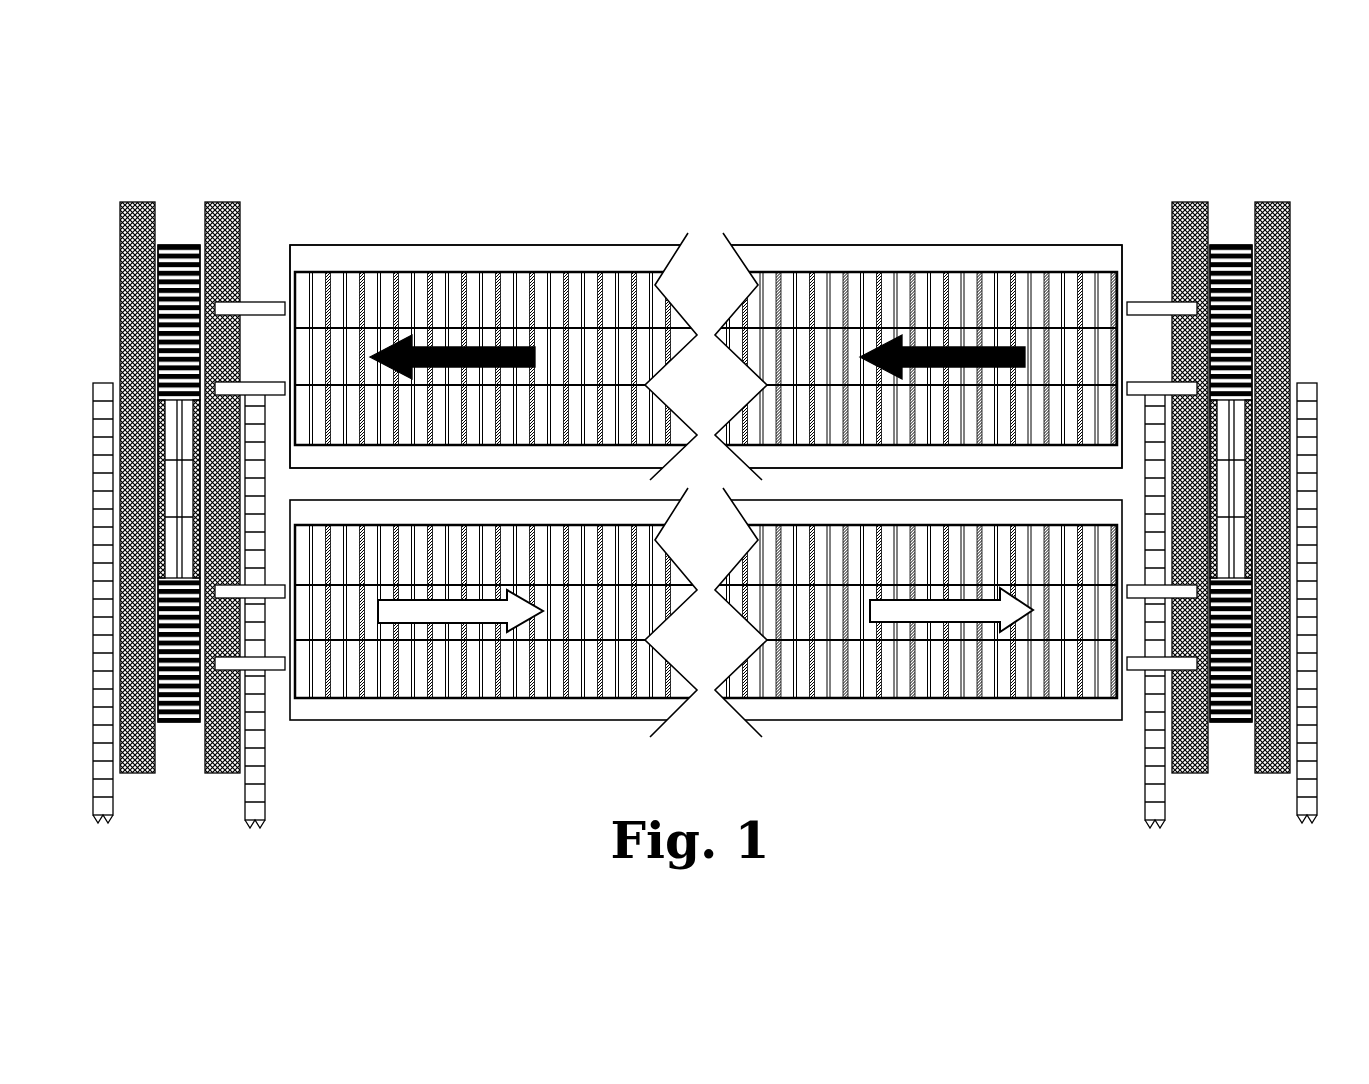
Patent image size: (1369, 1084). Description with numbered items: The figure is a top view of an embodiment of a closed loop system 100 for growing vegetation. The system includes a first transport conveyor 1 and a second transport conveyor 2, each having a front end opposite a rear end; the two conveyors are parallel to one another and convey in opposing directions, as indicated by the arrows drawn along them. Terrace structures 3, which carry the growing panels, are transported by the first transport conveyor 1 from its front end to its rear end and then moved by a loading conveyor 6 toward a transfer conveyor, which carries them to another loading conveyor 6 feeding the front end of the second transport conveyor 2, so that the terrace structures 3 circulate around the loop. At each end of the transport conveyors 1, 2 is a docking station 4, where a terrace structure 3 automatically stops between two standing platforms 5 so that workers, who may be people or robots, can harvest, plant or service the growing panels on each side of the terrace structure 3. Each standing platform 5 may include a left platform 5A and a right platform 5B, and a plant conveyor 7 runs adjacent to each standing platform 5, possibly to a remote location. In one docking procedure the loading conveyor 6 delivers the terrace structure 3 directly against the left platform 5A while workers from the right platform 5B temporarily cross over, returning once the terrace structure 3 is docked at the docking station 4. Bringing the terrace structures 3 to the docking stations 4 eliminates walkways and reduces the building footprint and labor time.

The closed loop system 100 is at (603, 207).
The first transport conveyor 1 is at (701, 484).
The second transport conveyor 2 is at (965, 708).
The terrace structure 3 is at (1027, 285).
The docking station 4 is at (177, 772).
The standing platform 5 is at (717, 432).
The left platform 5A is at (122, 202).
The right platform 5B is at (237, 202).
The loading conveyor 6 is at (255, 302).
The plant conveyor 7 is at (103, 795).